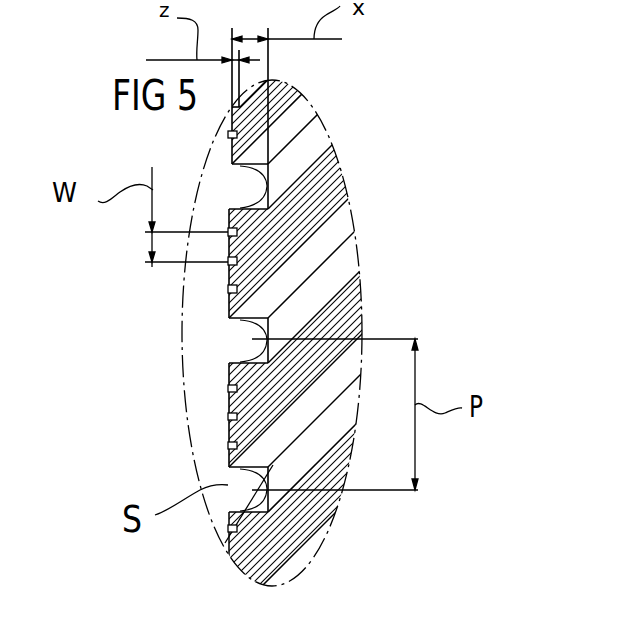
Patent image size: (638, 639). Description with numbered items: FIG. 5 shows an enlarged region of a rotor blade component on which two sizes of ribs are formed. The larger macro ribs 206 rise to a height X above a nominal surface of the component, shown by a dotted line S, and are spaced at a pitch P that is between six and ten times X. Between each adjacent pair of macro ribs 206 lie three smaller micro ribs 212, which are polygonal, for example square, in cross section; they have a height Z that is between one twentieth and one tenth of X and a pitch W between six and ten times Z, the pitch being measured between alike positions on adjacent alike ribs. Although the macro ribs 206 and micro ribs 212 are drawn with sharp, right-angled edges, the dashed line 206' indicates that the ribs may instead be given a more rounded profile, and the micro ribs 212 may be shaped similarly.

The macro ribs 206 is at (198, 340).
The micro ribs 212 is at (229, 417).
The rounded macro rib profile 206' is at (190, 522).